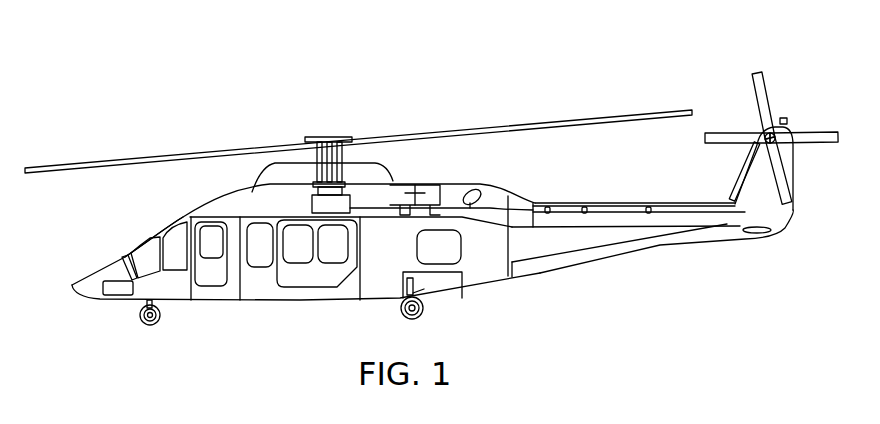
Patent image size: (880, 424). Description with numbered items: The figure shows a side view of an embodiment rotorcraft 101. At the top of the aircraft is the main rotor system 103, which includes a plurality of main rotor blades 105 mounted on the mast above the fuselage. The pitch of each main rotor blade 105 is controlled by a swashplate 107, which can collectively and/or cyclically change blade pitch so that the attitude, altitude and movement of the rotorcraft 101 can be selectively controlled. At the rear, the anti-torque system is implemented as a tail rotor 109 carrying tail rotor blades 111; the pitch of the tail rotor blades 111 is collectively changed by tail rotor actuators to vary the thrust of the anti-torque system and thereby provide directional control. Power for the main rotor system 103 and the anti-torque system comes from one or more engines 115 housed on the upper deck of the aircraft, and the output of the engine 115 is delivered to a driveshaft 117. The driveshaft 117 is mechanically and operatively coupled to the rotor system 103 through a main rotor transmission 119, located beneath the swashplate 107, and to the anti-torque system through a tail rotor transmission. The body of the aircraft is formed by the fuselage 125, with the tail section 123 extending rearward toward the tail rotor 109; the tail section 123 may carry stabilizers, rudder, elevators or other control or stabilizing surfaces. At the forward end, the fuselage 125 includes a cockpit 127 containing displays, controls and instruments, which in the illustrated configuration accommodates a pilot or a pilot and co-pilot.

The rotorcraft 101 is at (218, 82).
The main rotor system 103 is at (364, 108).
The main rotor blade 105 is at (165, 155).
The swashplate 107 is at (313, 184).
The tail rotor 109 is at (798, 103).
The tail rotor blade 111 is at (820, 143).
The engine 115 is at (415, 187).
The driveshaft 117 is at (370, 211).
The main rotor transmission 119 is at (312, 210).
The tail section 123 is at (640, 258).
The fuselage 125 is at (260, 301).
The cockpit 127 is at (132, 243).